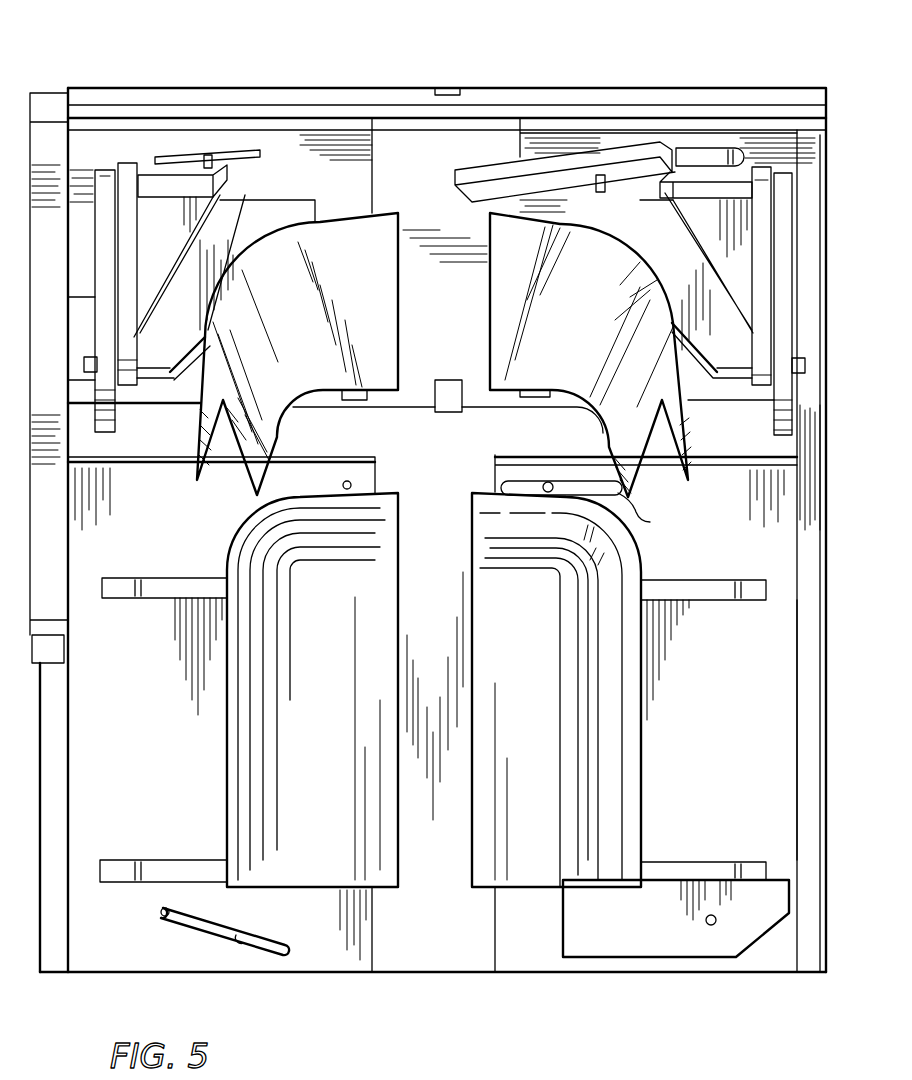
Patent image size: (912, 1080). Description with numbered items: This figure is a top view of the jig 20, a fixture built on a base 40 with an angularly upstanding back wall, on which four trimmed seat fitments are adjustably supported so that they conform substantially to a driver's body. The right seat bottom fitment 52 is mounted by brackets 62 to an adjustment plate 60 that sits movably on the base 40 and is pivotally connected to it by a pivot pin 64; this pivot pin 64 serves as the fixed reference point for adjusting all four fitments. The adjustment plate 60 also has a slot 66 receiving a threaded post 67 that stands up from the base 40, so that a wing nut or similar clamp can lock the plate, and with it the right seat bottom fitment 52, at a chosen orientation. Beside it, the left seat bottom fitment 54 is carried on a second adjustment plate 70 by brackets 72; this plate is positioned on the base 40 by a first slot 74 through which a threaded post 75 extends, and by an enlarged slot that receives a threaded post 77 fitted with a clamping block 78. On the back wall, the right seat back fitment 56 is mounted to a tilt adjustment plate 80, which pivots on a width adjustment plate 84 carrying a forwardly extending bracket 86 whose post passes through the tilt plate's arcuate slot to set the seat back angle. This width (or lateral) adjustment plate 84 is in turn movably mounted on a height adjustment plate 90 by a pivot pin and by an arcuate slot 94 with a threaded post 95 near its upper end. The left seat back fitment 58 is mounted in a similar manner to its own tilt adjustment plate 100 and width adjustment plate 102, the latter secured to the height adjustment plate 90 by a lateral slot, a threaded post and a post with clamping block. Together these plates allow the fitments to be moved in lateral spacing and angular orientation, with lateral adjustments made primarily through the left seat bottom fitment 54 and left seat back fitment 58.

The jig 20 is at (160, 75).
The base 40 is at (400, 940).
The right seat bottom fitment 52 is at (330, 875).
The left seat bottom fitment 54 is at (482, 877).
The right seat back fitment 56 is at (378, 232).
The left seat back fitment 58 is at (508, 285).
The adjustment plate 60 is at (155, 688).
The brackets 62 is at (165, 578).
The pivot pin 64 is at (347, 482).
The slot 66 is at (240, 940).
The threaded post 67 is at (162, 913).
The adjustment plate 70 is at (752, 800).
The brackets 72 is at (712, 578).
The first slot 74 is at (628, 506).
The threaded post 75 is at (548, 482).
The threaded post 77 is at (711, 926).
The clamping block 78 is at (630, 938).
The tilt adjustment plate 80 is at (95, 187).
The width adjustment plate 84 is at (313, 150).
The bracket 86 is at (140, 275).
The height adjustment plate 90 is at (400, 126).
The arcuate slot 94 is at (240, 150).
The threaded post 95 is at (207, 155).
The tilt adjustment plate 100 is at (787, 210).
The width adjustment plate 102 is at (555, 143).